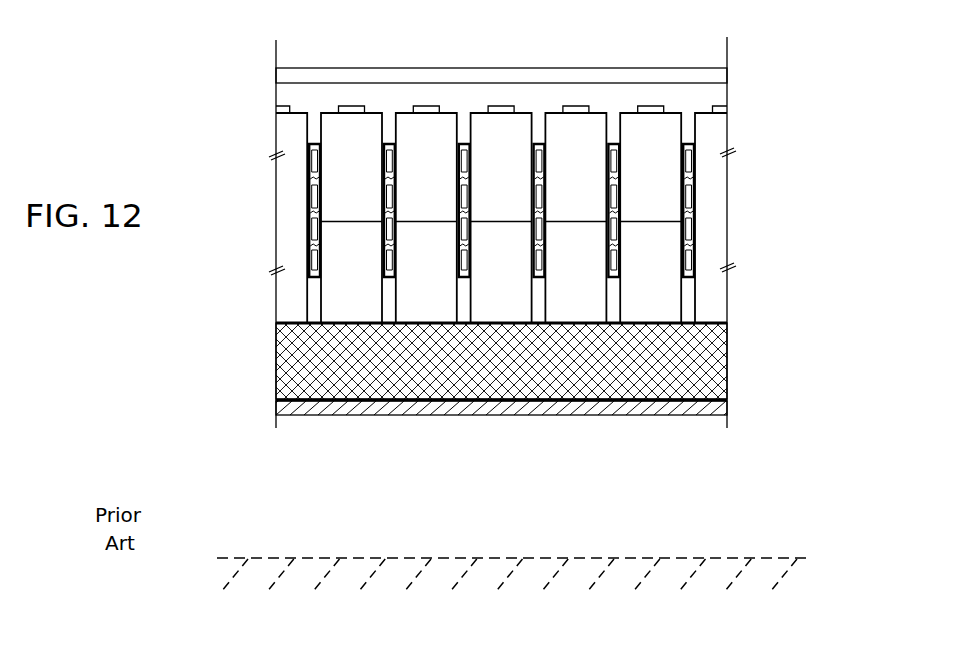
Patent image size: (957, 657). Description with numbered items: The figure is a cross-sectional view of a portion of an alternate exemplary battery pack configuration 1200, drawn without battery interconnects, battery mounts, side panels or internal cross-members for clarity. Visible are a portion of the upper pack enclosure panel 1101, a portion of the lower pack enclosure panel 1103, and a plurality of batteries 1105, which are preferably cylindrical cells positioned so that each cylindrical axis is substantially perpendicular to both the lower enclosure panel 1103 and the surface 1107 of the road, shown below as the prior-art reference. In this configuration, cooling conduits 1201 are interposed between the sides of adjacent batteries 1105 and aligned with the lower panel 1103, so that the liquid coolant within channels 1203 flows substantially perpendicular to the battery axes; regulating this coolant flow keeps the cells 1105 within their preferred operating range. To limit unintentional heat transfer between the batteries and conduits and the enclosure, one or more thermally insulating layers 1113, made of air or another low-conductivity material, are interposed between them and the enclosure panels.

The battery pack configuration 1200 is at (774, 58).
The upper pack enclosure panel 1101 is at (398, 76).
The batteries 1105 is at (501, 214).
The cooling conduits 1201 is at (690, 280).
The channels 1203 is at (308, 260).
The thermally insulating layers 1113 is at (282, 381).
The lower pack enclosure panel 1103 is at (546, 405).
The surface of the road 1107 is at (492, 555).